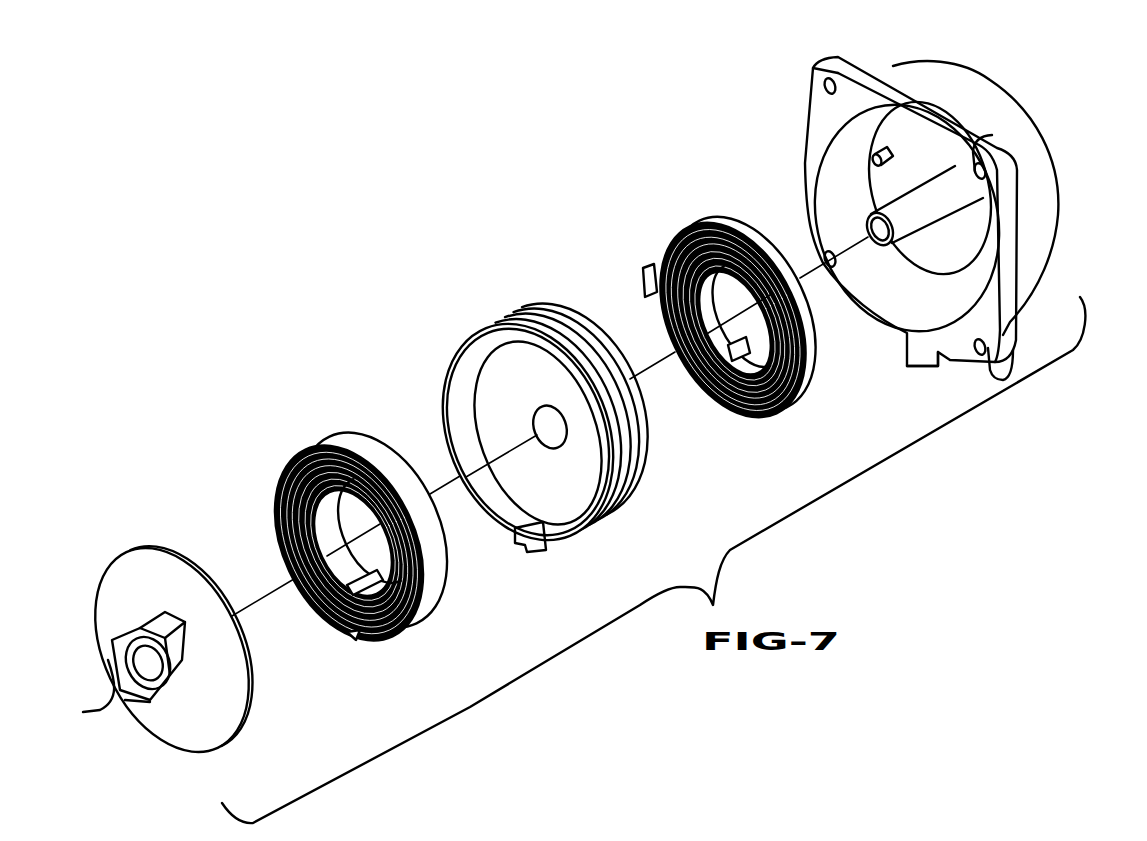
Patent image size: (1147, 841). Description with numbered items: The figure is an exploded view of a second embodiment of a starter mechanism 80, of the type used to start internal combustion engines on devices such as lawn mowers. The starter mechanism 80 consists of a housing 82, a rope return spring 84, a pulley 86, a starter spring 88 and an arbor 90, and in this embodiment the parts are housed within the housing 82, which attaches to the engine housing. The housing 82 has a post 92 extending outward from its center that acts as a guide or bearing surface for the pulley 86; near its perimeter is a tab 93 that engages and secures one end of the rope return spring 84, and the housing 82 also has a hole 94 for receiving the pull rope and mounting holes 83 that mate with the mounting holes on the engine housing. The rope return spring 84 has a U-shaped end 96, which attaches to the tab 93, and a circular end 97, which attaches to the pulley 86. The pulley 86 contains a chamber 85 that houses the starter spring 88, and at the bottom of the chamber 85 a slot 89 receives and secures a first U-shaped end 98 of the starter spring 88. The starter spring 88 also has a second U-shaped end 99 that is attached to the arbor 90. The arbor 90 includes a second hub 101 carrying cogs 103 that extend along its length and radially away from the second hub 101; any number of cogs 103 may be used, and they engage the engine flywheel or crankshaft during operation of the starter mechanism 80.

The starter mechanism 80 is at (237, 217).
The housing 82 is at (967, 92).
The mounting holes 83 is at (970, 143).
The rope return spring 84 is at (715, 224).
The chamber 85 is at (528, 467).
The pulley 86 is at (511, 311).
The starter spring 88 is at (332, 440).
The slot 89 is at (518, 548).
The arbor 90 is at (136, 550).
The post 92 is at (947, 197).
The tab 93 is at (872, 162).
The hole 94 is at (917, 357).
The U-shaped end 96 is at (651, 268).
The circular end 97 is at (717, 400).
The first U-shaped end 98 is at (357, 638).
The second U-shaped end 99 is at (318, 603).
The second hub 101 is at (176, 658).
The cogs 103 is at (125, 700).